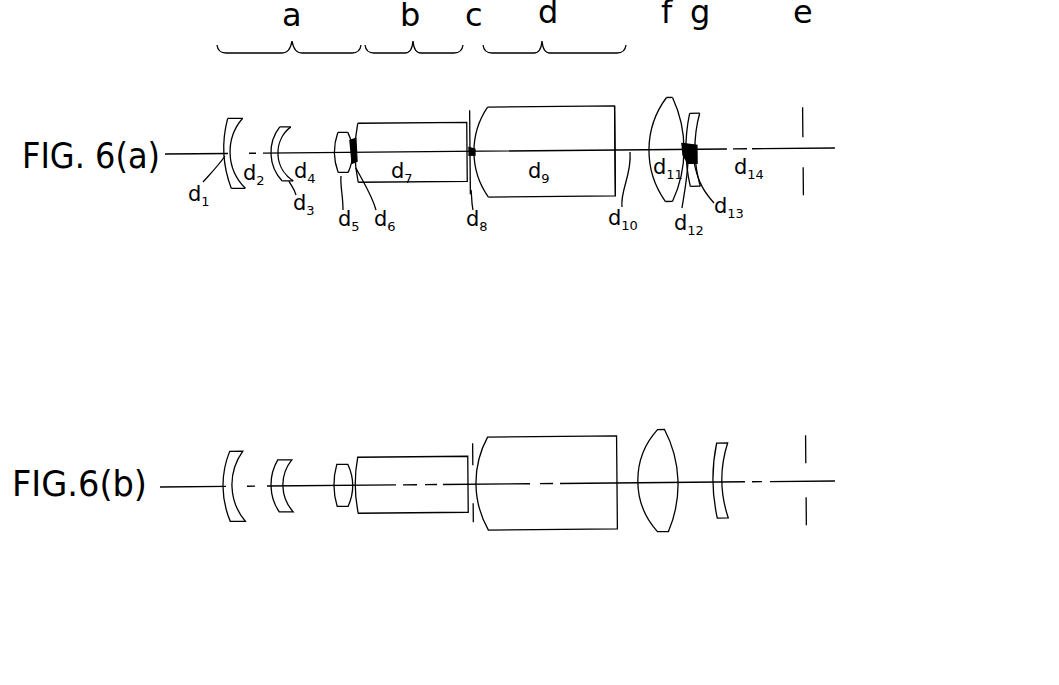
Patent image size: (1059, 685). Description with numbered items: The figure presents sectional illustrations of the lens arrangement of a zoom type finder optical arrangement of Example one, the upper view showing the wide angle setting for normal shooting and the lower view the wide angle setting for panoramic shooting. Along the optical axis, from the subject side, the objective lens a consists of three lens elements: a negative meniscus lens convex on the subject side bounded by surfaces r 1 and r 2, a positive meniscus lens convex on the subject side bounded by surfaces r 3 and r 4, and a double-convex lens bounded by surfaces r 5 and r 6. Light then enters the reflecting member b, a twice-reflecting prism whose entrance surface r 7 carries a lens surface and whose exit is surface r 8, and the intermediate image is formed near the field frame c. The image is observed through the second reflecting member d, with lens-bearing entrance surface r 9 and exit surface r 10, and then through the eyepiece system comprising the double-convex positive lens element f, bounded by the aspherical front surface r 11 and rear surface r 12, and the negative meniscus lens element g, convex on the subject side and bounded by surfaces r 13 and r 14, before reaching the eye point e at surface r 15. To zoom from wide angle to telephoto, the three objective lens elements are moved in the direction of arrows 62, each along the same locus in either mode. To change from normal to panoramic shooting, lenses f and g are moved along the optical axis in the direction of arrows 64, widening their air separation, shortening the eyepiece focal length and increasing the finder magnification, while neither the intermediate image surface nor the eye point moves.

In FIG. 6A, the arrows 62 is at (283, 197).
In FIG. 6B, the arrows 62 is at (342, 535).
In FIG. 6A, the arrows 64 is at (691, 237).
In FIG. 6B, the arrows 64 is at (682, 480).
In FIG. 6A, the refracting surface r1 1 is at (227, 126).
In FIG. 6A, the refracting surface r2 2 is at (242, 127).
In FIG. 6A, the refracting surface r3 3 is at (278, 131).
In FIG. 6A, the refracting surface r4 4 is at (291, 128).
In FIG. 6A, the refracting surface r5 5 is at (338, 134).
In FIG. 6A, the refracting surface r6 6 is at (349, 134).
In FIG. 6A, the refracting surface r7 7 is at (358, 127).
In FIG. 6A, the refracting surface r8 8 is at (468, 128).
In FIG. 6A, the refracting surface r9 9 is at (486, 110).
In FIG. 6A, the refracting surface r10 10 is at (616, 109).
In FIG. 6A, the front surface r11 11 is at (653, 122).
In FIG. 6A, the refracting surface r12 12 is at (672, 102).
In FIG. 6A, the refracting surface r13 13 is at (691, 118).
In FIG. 6A, the refracting surface r14 14 is at (700, 120).
In FIG. 6A, the refracting surface r15 15 is at (803, 137).